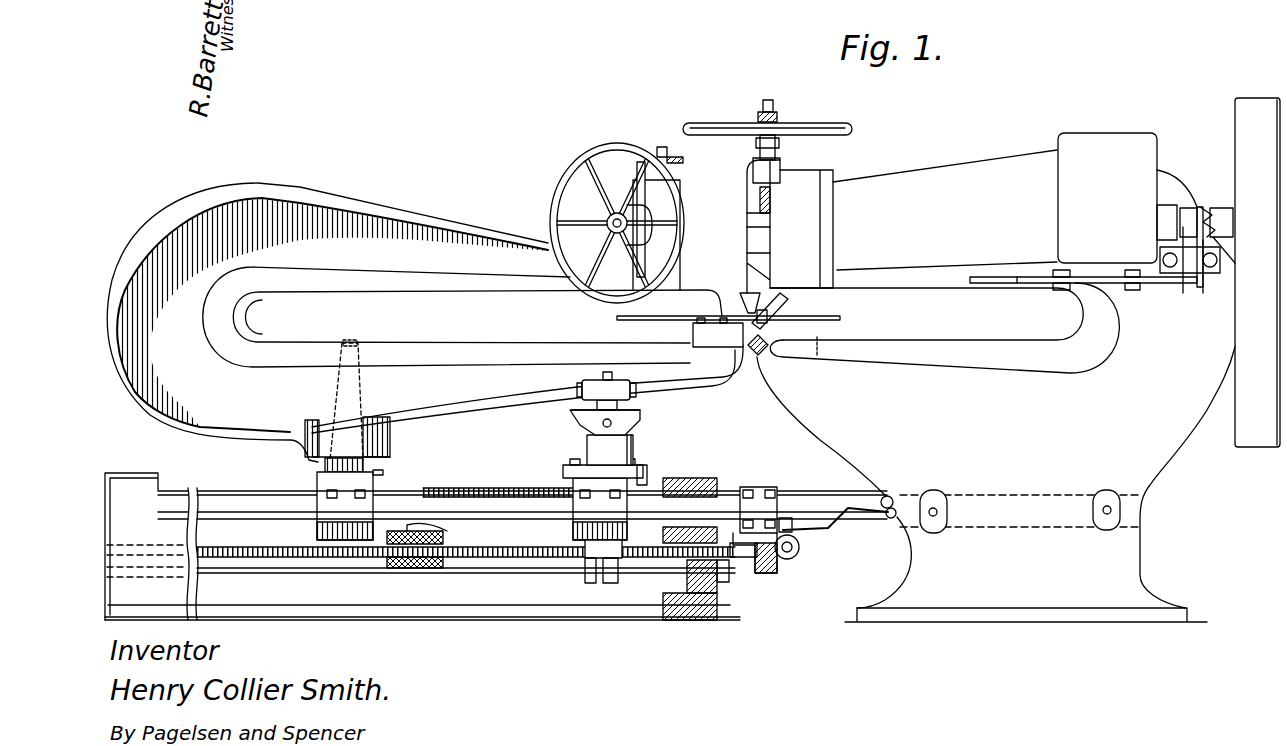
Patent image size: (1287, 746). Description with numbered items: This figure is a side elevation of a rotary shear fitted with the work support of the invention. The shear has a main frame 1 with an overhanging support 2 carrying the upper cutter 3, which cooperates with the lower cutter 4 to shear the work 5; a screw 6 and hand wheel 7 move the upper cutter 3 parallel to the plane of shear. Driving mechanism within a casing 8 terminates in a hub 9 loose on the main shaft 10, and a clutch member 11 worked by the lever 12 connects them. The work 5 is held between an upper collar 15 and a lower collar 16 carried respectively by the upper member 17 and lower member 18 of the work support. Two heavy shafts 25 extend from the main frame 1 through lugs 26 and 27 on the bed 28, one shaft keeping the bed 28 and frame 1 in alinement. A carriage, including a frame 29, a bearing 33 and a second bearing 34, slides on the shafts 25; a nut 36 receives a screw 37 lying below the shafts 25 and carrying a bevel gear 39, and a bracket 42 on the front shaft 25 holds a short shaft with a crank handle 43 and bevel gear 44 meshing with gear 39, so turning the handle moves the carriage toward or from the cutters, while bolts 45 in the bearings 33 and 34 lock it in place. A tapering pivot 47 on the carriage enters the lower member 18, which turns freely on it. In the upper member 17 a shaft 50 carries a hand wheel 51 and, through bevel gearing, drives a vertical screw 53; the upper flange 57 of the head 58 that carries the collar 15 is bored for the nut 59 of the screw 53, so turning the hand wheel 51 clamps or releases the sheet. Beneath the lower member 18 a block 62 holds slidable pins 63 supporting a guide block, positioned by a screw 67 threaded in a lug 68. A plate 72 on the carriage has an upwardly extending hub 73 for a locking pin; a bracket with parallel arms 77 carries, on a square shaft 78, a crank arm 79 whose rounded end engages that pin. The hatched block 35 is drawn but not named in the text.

The main frame 1 is at (996, 452).
The overhanging support 2 is at (952, 213).
The upper cutter 3 is at (785, 302).
The lower cutter 4 is at (762, 344).
The work 5 is at (838, 315).
The screw 6 is at (773, 110).
The hand wheel 7 is at (826, 132).
The casing 8 is at (1257, 272).
The hub 9 is at (1222, 208).
The main shaft 10 is at (1176, 215).
The clutch member 11 is at (1198, 207).
The lever 12 is at (1157, 284).
The upper collar 15 is at (743, 309).
The lower collar 16 is at (733, 330).
The upper member 17 is at (414, 322).
The lower member 18 is at (498, 408).
The shafts 25 is at (805, 496).
The lug 26 is at (130, 480).
The lug 27 is at (700, 478).
The bed 28 is at (422, 554).
The frame 29 is at (488, 486).
The bearing 33 is at (317, 490).
The second bearing 34 is at (630, 486).
The hatched block 35 is at (408, 562).
The nut 36 is at (422, 530).
The screw 37 is at (526, 560).
The bevel gear 39 is at (767, 573).
The bracket 42 is at (800, 546).
The crank handle 43 is at (833, 529).
The bevel gear 44 is at (790, 556).
The bolts 45 is at (473, 507).
The tapering pivot 47 is at (340, 399).
The shaft 50 is at (608, 217).
The hand wheel 51 is at (562, 180).
The screw 53 is at (661, 147).
The upper flange 57 is at (628, 216).
The head 58 is at (677, 235).
The nut 59 is at (683, 160).
The block 62 is at (606, 395).
The pins 63 is at (602, 376).
The screw 67 is at (641, 419).
The lug 68 is at (590, 426).
The plate 72 is at (564, 470).
The upwardly extending hub 73 is at (610, 450).
The parallel arms 77 is at (612, 583).
The square shaft 78 is at (588, 575).
The crank arm 79 is at (606, 582).